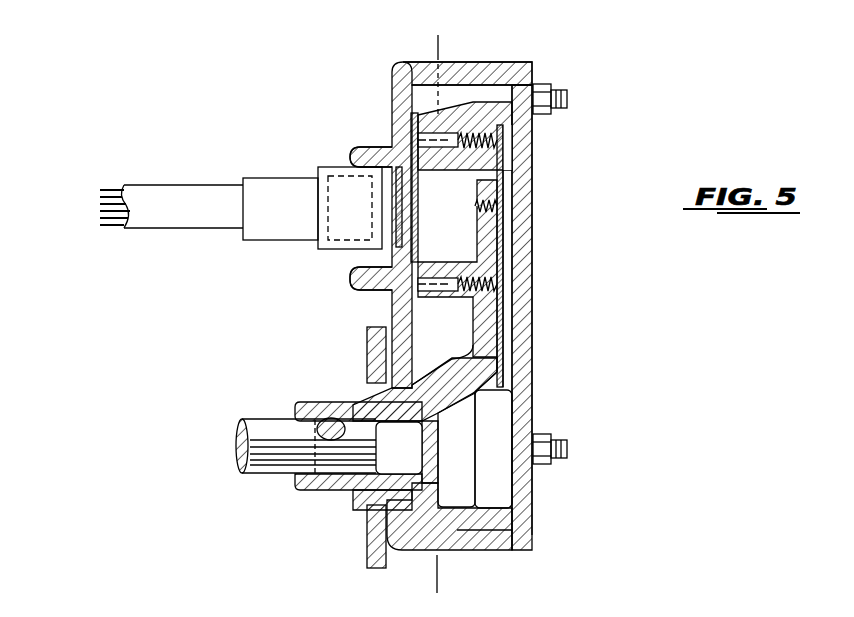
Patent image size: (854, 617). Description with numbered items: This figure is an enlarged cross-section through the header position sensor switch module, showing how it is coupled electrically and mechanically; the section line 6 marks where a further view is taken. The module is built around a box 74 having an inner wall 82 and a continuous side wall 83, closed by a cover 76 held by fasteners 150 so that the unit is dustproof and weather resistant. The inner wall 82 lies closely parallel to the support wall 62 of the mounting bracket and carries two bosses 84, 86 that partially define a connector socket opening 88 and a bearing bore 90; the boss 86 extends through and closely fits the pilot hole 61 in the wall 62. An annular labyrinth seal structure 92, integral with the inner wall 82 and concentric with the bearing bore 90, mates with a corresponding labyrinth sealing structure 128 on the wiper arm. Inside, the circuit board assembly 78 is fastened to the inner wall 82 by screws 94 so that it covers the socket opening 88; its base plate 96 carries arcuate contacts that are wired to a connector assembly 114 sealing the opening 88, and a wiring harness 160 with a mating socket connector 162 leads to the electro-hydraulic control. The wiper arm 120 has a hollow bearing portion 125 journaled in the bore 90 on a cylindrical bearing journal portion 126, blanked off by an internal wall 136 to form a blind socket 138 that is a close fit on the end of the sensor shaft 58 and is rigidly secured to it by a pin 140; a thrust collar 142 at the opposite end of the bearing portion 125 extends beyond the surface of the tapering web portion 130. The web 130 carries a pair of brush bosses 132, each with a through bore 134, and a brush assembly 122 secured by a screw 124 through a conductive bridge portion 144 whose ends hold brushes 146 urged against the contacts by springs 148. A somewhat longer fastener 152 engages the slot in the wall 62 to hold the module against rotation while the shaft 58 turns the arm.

The section line 6- 6 is at (446, 43).
The shaft 58 is at (243, 425).
The pilot hole 61 is at (360, 387).
The support wall 62 is at (367, 345).
The box 74 is at (490, 586).
The cover 76 is at (547, 377).
The circuit board assembly 78 is at (422, 315).
The inner wall 82 is at (393, 305).
The side wall 83 is at (505, 62).
The boss 84 is at (357, 147).
The boss 86 is at (355, 392).
The connector socket opening 88 is at (378, 178).
The bearing bore 90 is at (350, 493).
The labyrinth seal structure 92 is at (389, 536).
The screws 94 is at (411, 232).
The circuit board base plate 96 is at (399, 207).
The connector assembly 114 is at (320, 175).
The arm 120 is at (503, 313).
The brush assembly 122 is at (514, 175).
The screw 124 is at (503, 212).
The bearing portion 125 is at (457, 480).
The bearing journal portion 126 is at (310, 495).
The labyrinth sealing structure 128 is at (457, 542).
The web portion 130 is at (505, 338).
The brush bosses 132 is at (430, 120).
The through bore 134 is at (533, 137).
The internal wall 136 is at (440, 433).
The socket 138 is at (391, 474).
The pin 140 is at (318, 427).
The thrust collar 142 is at (505, 402).
The bridge portion 144 is at (503, 257).
The brushes 146 is at (425, 147).
The springs 148 is at (500, 147).
The fasteners 150 is at (567, 452).
The fastener 152 is at (552, 82).
The wiring harness 160 is at (165, 192).
The socket connector 162 is at (276, 232).